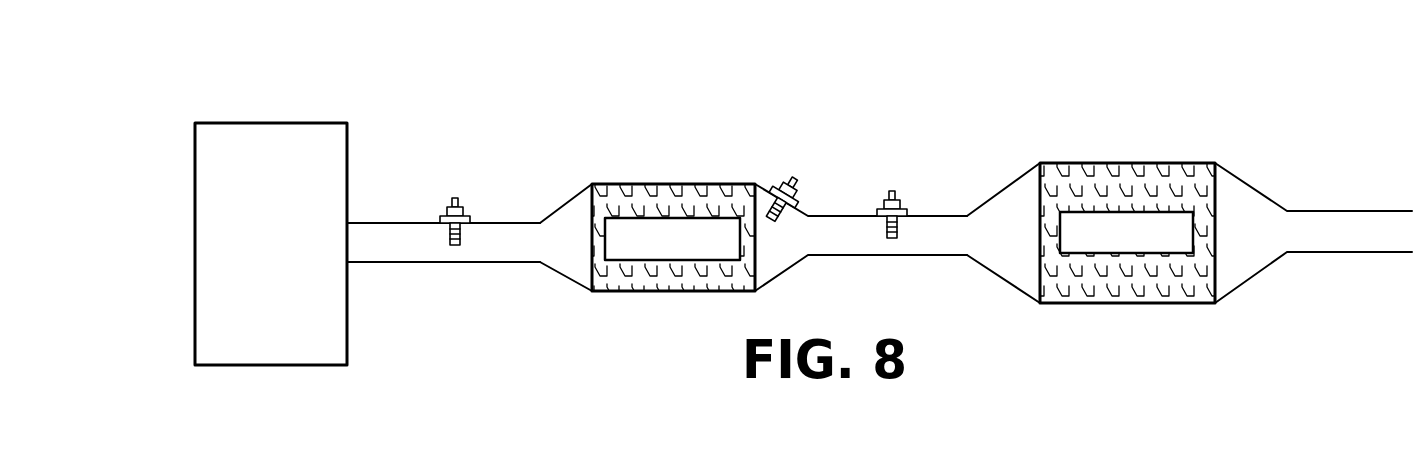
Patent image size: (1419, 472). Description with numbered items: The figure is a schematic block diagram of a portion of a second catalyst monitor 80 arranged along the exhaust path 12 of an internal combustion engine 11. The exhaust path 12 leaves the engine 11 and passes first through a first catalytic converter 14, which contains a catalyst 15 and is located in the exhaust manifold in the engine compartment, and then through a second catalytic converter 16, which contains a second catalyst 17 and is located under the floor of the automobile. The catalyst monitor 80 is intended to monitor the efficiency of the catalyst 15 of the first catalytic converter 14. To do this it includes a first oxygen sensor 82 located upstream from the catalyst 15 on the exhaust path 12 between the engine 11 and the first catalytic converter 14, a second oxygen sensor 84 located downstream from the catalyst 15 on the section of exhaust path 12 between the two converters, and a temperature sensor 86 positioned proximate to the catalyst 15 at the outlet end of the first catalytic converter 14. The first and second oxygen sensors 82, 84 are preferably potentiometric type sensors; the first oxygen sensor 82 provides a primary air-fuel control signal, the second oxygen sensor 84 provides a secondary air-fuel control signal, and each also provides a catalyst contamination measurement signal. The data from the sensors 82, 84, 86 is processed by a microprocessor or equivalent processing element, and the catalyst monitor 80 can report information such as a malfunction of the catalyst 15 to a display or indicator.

The internal combustion engine 11 is at (320, 138).
The exhaust path 12 is at (400, 253).
The first catalytic converter 14 is at (765, 283).
The catalyst 15 is at (627, 250).
The second catalytic converter 16 is at (1255, 263).
The second catalyst 17 is at (1078, 245).
The catalyst monitor 80 is at (566, 147).
The first oxygen sensor 82 is at (451, 196).
The second oxygen sensor 84 is at (893, 194).
The temperature sensor 86 is at (800, 180).